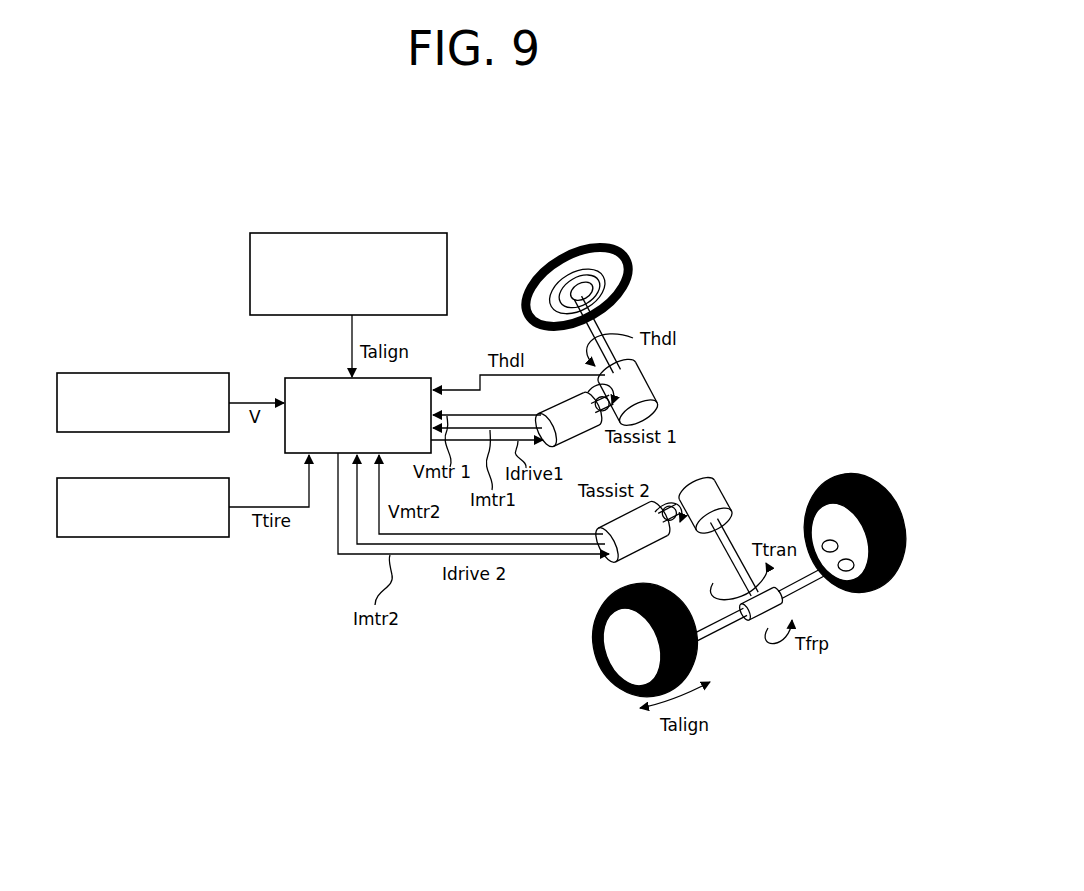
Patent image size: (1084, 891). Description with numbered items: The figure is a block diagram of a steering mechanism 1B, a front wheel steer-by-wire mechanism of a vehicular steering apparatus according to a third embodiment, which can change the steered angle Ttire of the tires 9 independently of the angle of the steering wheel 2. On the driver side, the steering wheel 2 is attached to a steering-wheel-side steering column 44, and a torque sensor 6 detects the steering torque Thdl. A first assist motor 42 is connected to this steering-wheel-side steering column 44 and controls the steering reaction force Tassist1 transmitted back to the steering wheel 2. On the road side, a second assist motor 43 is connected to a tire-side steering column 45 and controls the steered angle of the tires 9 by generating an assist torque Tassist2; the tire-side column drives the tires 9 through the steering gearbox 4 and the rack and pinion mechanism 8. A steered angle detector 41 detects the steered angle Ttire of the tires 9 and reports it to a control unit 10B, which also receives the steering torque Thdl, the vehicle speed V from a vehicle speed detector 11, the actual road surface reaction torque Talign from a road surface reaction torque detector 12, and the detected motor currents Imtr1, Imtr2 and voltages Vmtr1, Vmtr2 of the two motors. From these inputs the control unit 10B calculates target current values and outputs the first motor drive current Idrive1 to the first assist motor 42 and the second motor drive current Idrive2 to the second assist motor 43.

The steering mechanism 1B is at (735, 280).
The steering wheel 2 is at (612, 246).
The steering gearbox 4 is at (778, 604).
The torque sensor 6 is at (652, 372).
The rack and pinion mechanism 8 is at (727, 625).
The tires 9 is at (883, 582).
The control unit 10B is at (285, 385).
The vehicle speed detector 11 is at (145, 372).
The road surface reaction torque detector 12 is at (350, 233).
The steered angle detector 41 is at (141, 537).
The first assist motor 42 is at (575, 426).
The second assist motor 43 is at (611, 565).
The steering-wheel-side steering column 44 is at (600, 337).
The tire-side steering column 45 is at (733, 540).